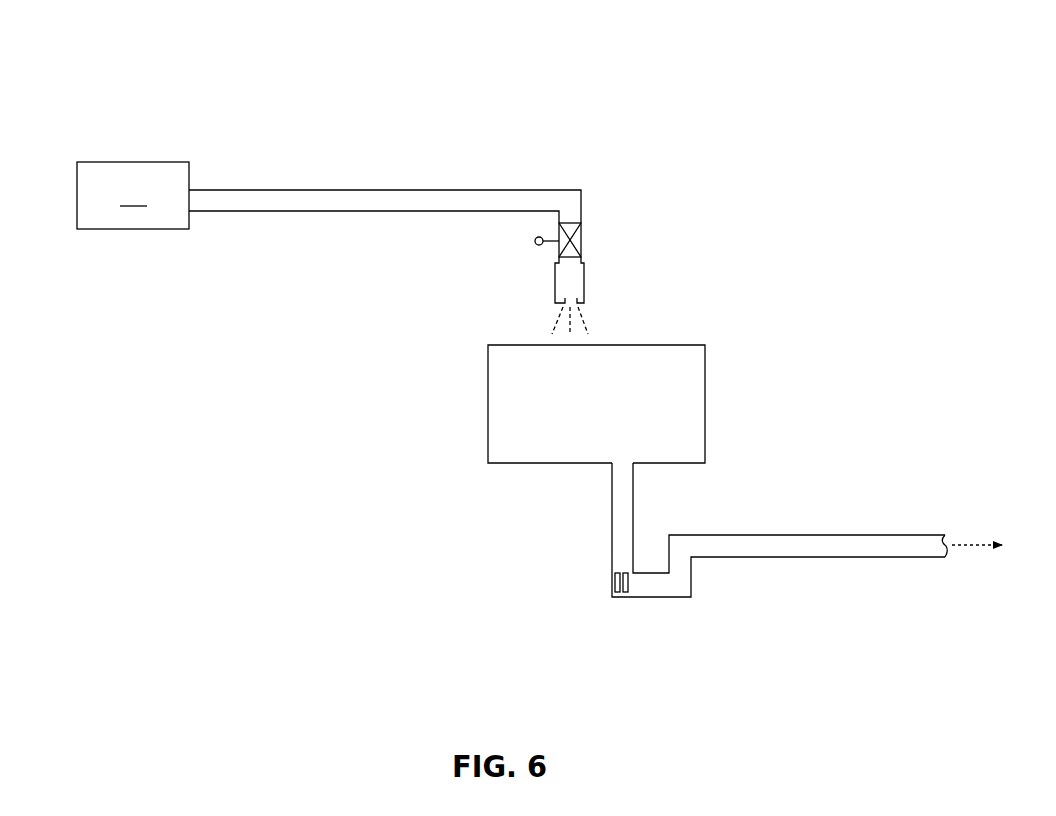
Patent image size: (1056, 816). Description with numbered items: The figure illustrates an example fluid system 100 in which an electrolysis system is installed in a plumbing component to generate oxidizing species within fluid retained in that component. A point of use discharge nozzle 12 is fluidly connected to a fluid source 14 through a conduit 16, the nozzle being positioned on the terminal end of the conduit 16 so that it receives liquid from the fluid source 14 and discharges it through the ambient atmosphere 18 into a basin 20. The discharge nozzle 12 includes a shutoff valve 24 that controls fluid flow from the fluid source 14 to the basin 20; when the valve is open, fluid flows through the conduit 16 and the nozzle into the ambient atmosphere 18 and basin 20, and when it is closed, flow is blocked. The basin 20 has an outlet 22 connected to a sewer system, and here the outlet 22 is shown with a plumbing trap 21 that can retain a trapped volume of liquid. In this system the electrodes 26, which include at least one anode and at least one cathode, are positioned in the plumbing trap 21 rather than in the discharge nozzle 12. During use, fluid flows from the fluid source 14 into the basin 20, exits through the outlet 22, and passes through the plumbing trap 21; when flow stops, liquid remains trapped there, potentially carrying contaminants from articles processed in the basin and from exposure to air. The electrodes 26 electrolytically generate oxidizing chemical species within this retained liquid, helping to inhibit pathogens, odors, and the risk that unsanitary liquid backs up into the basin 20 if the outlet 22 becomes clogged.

The fluid system 100 is at (975, 79).
The point of use discharge nozzle 12 is at (603, 287).
The fluid source 14 is at (133, 195).
The conduit 16 is at (325, 189).
The ambient atmosphere 18 is at (587, 316).
The basin 20 is at (488, 410).
The plumbing trap 21 is at (580, 550).
The outlet 22 is at (633, 505).
The shutoff valve 24 is at (535, 241).
The electrodes 26 is at (614, 590).